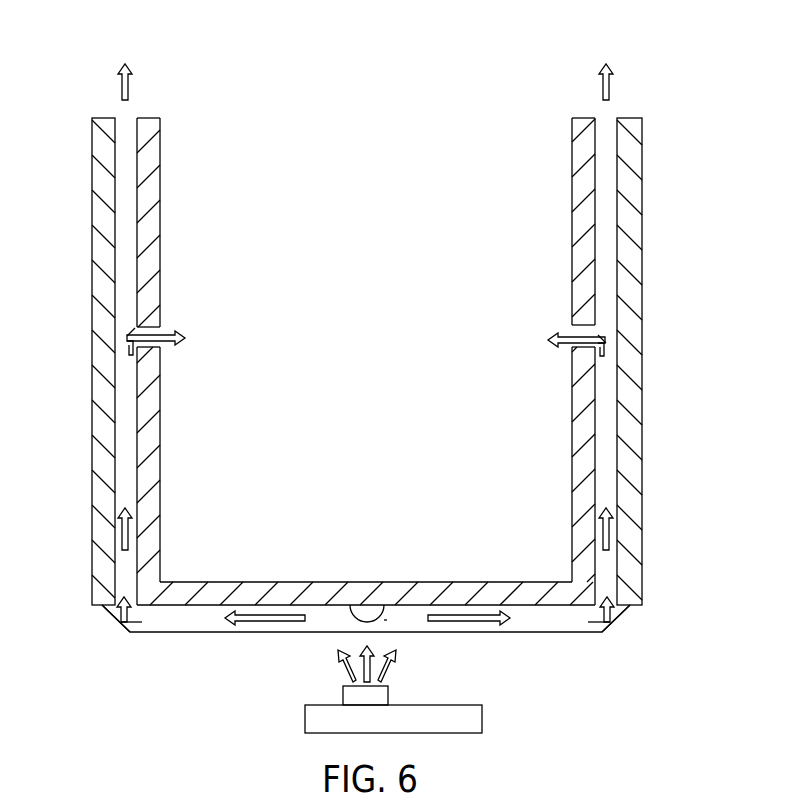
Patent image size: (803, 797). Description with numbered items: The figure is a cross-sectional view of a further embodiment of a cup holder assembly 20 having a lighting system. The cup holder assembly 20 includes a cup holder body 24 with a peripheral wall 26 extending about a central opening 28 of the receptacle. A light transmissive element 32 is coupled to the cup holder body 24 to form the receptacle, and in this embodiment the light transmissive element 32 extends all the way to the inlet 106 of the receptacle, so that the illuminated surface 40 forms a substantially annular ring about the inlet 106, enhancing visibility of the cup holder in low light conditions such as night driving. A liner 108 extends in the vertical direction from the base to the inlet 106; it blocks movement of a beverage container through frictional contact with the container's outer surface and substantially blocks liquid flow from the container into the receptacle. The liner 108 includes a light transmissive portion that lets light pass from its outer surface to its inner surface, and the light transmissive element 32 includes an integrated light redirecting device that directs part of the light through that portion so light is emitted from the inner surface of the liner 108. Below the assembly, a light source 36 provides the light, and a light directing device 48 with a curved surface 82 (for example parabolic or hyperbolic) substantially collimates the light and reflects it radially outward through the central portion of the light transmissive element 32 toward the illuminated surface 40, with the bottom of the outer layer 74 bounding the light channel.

The cup holder assembly 20 is at (172, 38).
The cup holder body 24 is at (652, 175).
The peripheral wall 26 is at (640, 362).
The central opening 28 is at (266, 130).
The light transmissive element 32 is at (518, 633).
The light source 36 is at (482, 757).
The illuminated surface 40 is at (128, 118).
The light directing device 48 is at (367, 598).
The bottom of outer layer 74 is at (96, 606).
The curved surface 82 is at (382, 623).
The inlet 106 is at (437, 130).
The liner 108 is at (160, 468).